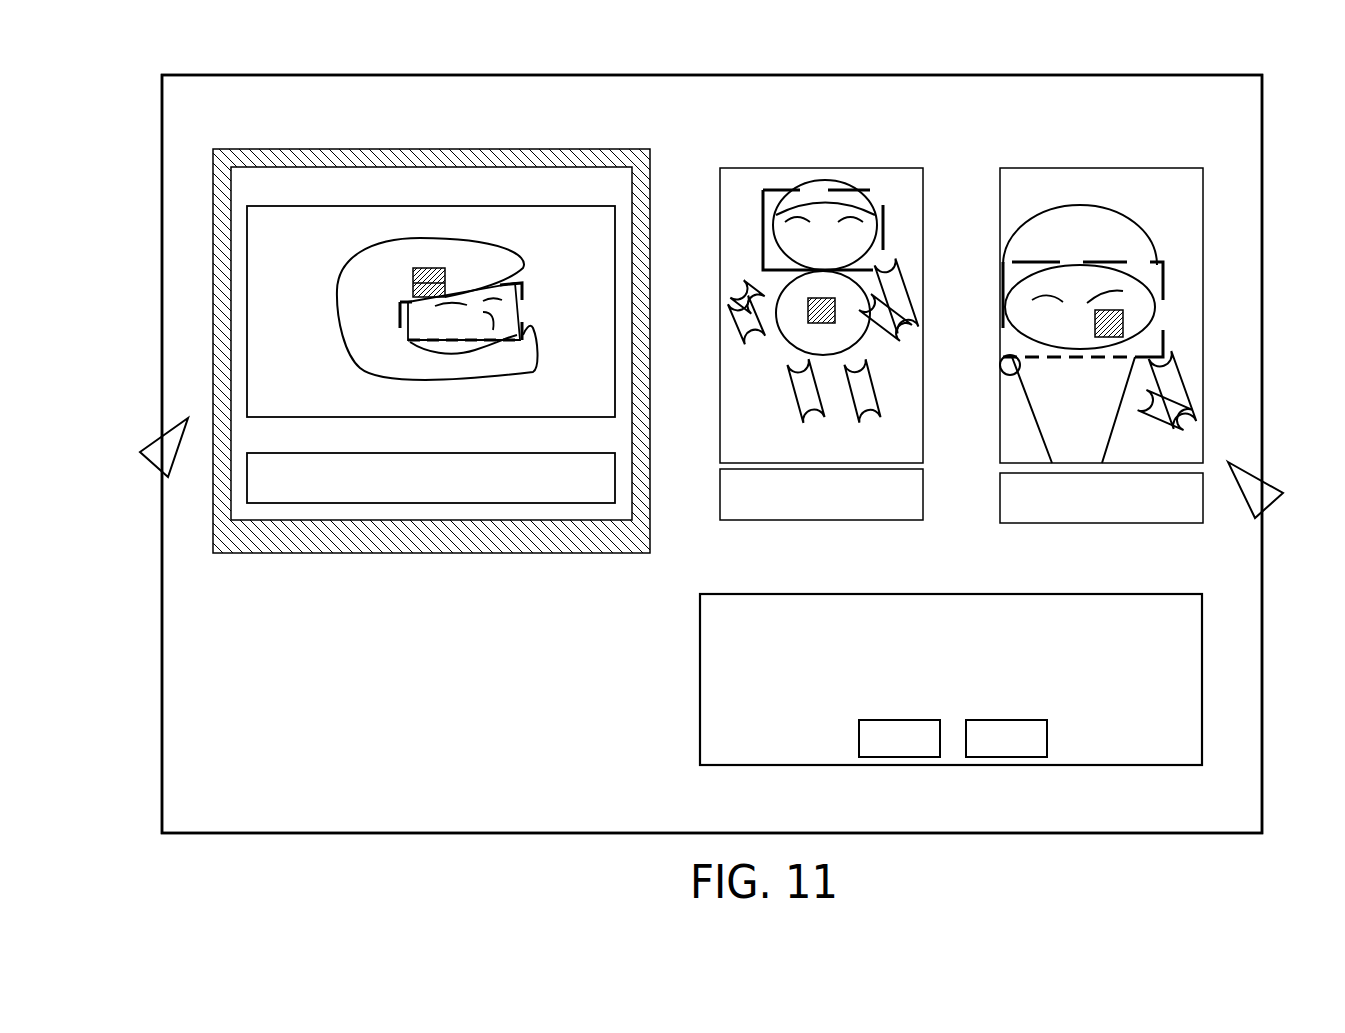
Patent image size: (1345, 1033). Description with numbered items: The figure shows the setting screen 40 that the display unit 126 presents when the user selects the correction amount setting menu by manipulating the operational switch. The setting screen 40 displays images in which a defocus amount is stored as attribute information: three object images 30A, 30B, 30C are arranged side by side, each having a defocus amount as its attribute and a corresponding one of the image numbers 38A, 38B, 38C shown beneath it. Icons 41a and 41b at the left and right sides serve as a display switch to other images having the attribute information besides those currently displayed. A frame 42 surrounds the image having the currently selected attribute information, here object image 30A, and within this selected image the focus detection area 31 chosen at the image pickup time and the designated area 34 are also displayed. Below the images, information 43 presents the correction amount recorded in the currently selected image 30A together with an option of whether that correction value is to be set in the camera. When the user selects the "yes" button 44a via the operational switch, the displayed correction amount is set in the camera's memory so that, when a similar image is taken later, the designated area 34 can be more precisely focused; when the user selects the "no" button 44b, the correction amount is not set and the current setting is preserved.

The setting screen 40 is at (1073, 77).
The display unit 126 is at (1258, 327).
The object image 30A is at (431, 261).
The object image 30B is at (842, 168).
The object image 30C is at (1113, 168).
The focus detection area 31 is at (412, 268).
The designated area 34 is at (408, 329).
The image number 38A is at (473, 503).
The image number 38B is at (850, 520).
The image number 38C is at (1130, 523).
The icon 41a is at (153, 467).
The icon 41b is at (1268, 505).
The frame 42 is at (340, 553).
The information 43 is at (927, 707).
The "yes" button 44a is at (940, 740).
The "no" button 44b is at (1047, 738).